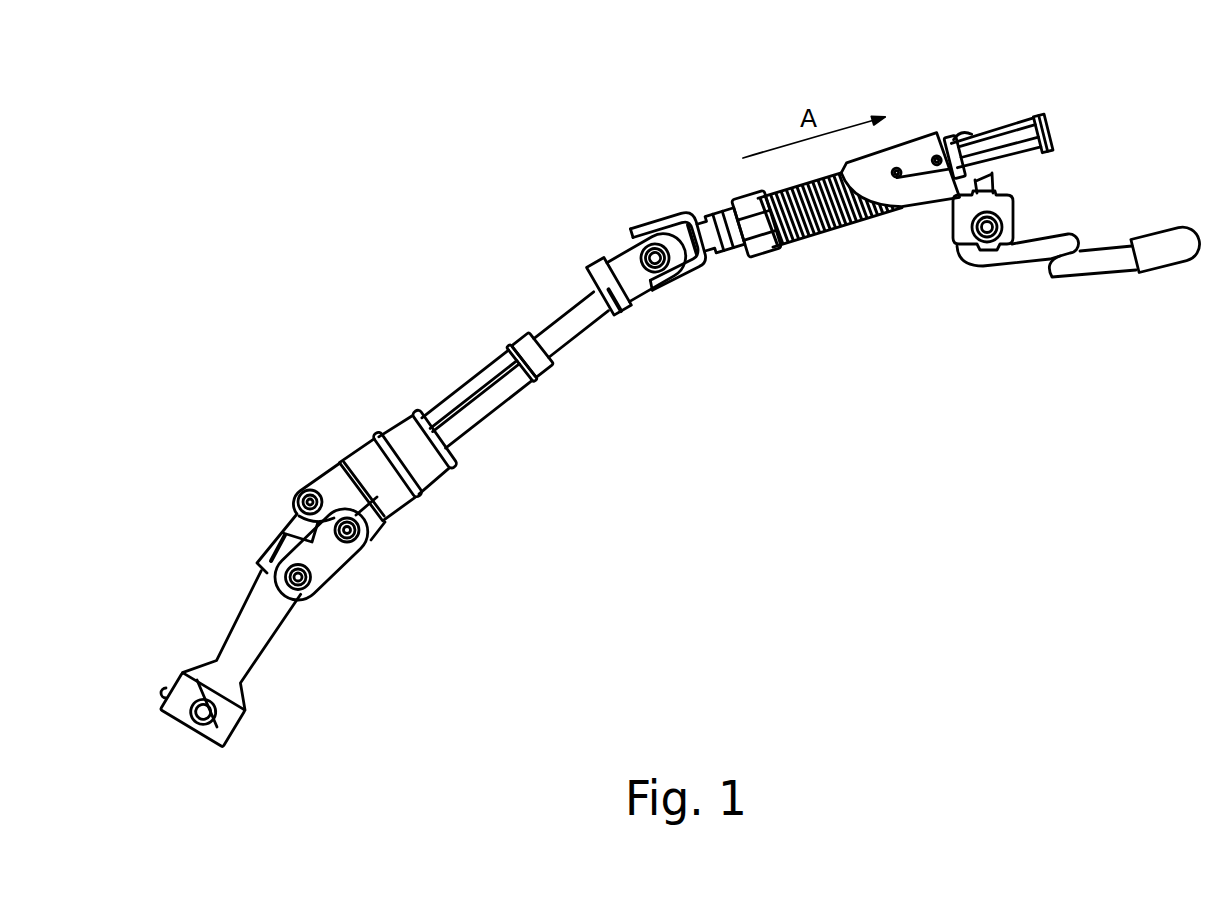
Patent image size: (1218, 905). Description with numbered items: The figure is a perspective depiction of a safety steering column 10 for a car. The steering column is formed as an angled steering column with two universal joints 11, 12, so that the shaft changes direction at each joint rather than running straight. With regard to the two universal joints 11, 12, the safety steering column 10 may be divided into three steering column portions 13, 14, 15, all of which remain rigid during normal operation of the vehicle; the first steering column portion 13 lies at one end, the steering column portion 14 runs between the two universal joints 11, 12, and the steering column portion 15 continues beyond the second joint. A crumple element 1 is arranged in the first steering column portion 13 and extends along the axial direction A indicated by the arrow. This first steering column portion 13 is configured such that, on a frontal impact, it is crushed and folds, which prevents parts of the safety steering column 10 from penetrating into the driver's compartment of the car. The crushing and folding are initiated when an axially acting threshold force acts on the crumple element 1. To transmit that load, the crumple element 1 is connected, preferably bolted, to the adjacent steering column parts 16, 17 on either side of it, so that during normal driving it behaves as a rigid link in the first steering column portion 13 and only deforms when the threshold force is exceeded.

The crumple element 1 is at (890, 147).
The safety steering column 10 is at (511, 203).
The universal joint 11 is at (643, 203).
The universal joint 12 is at (290, 483).
The first steering column portion 13 is at (843, 247).
The steering column portion 14 is at (462, 360).
The steering column portion 15 is at (227, 622).
The adjacent steering column part 16 is at (983, 130).
The adjacent steering column part 17 is at (723, 223).